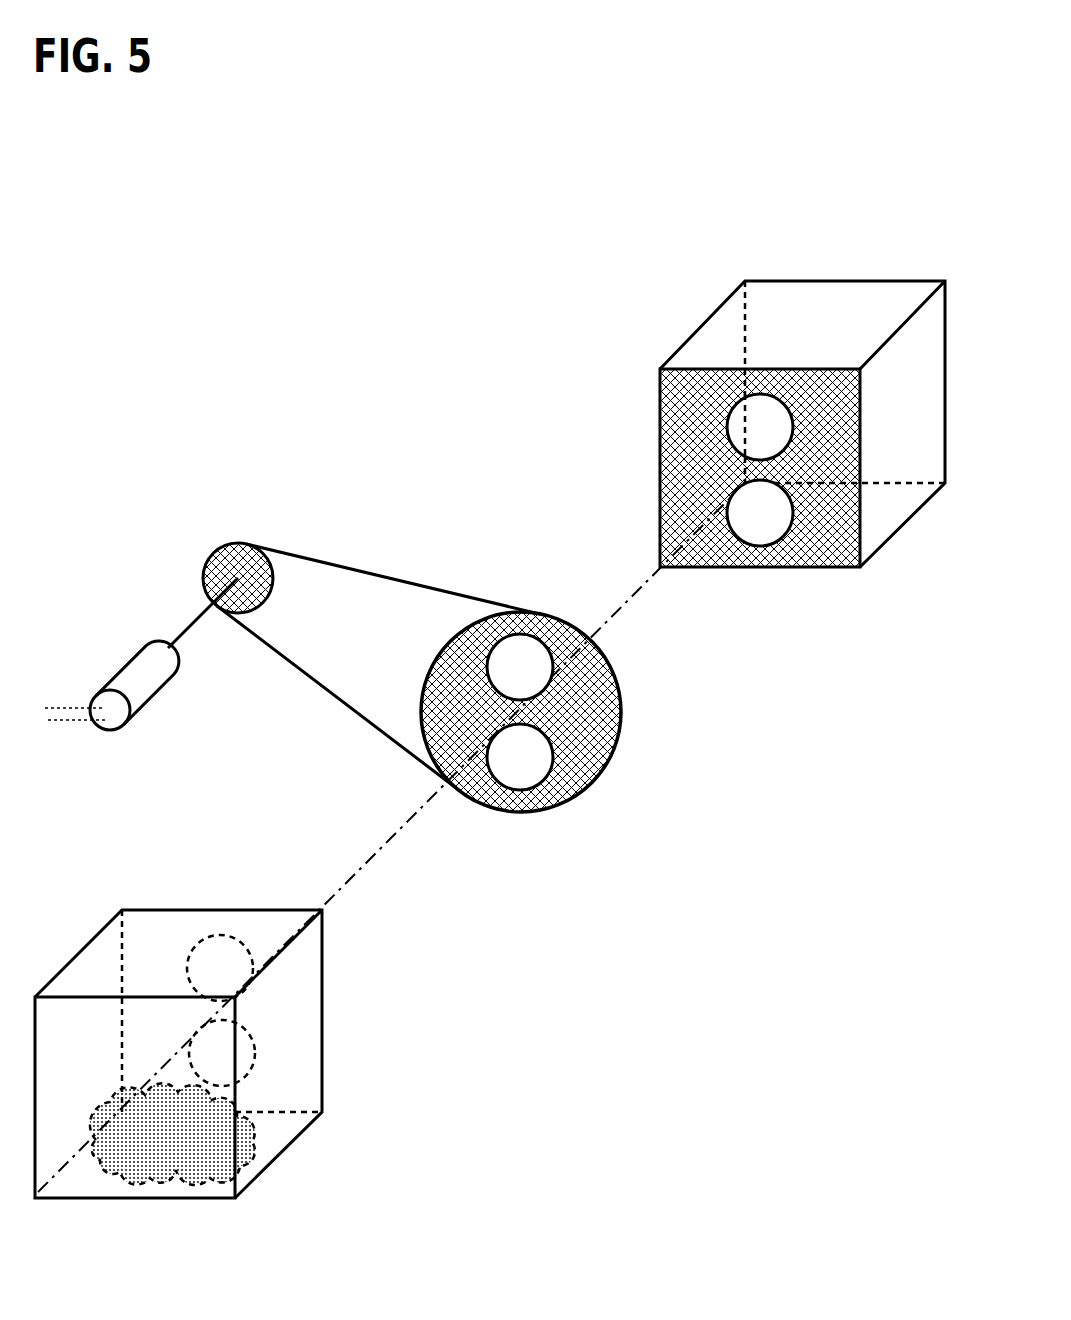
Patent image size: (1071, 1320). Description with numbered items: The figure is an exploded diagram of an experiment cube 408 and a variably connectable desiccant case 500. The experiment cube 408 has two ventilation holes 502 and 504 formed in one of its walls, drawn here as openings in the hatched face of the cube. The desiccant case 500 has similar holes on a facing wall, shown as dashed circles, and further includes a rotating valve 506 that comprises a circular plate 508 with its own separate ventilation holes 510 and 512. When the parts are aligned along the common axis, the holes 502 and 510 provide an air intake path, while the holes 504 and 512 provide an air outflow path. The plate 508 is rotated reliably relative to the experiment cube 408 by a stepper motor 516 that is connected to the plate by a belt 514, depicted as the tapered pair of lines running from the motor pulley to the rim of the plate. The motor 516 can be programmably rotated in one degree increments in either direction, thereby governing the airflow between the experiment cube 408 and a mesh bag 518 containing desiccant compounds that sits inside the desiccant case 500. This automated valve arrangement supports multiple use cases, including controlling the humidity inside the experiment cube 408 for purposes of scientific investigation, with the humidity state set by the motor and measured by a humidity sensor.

The experiment cube 408 is at (879, 279).
The variably connectable desiccant case 500 is at (138, 908).
The ventilation hole 502 is at (758, 394).
The ventilation hole 504 is at (777, 546).
The rotating valve 506 is at (594, 749).
The circular plate 508 is at (598, 780).
The ventilation hole 510 is at (577, 659).
The ventilation hole 512 is at (545, 786).
The belt 514 is at (370, 570).
The stepper motor 516 is at (157, 693).
The mesh bag 518 is at (250, 1138).